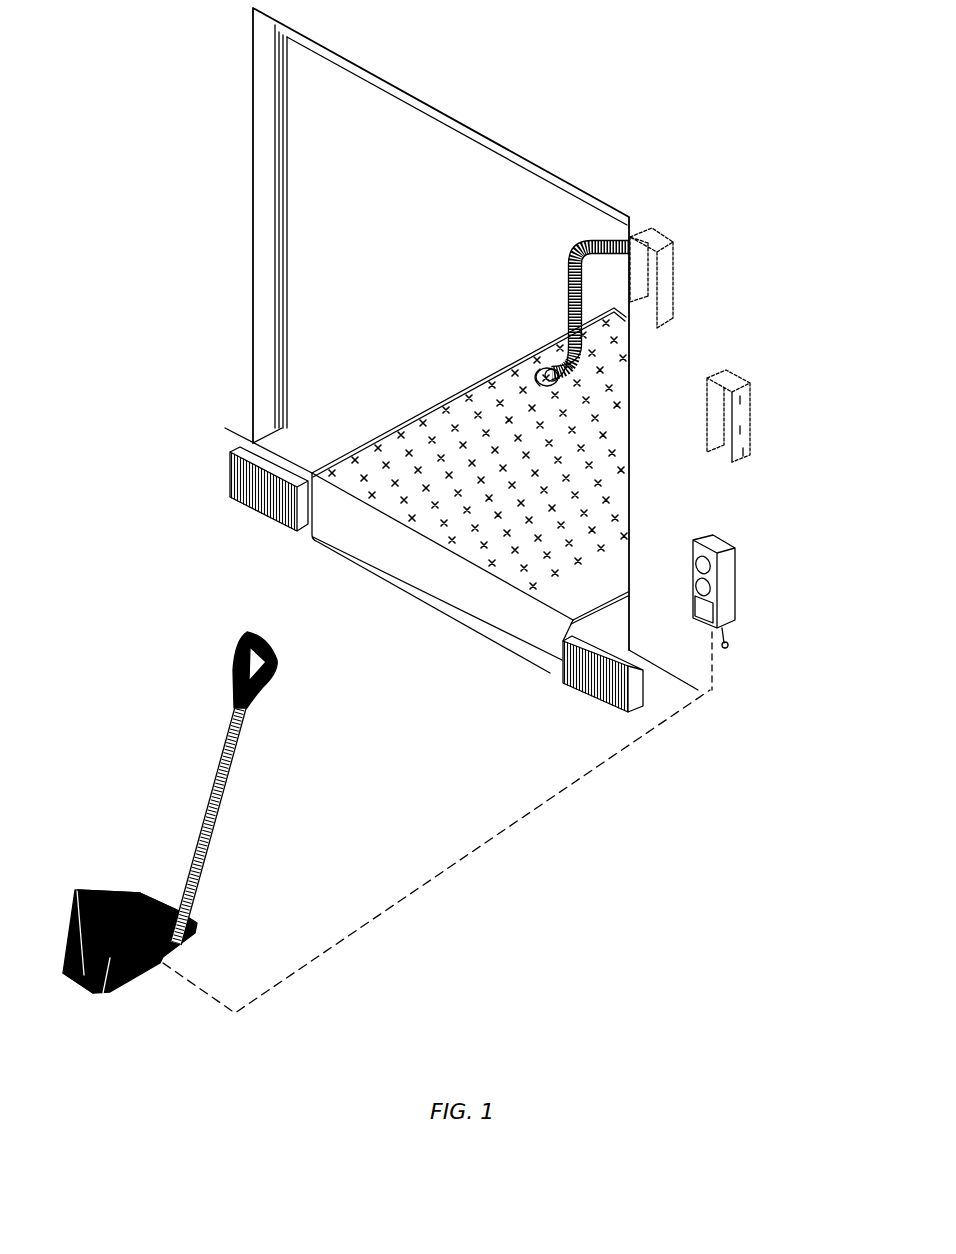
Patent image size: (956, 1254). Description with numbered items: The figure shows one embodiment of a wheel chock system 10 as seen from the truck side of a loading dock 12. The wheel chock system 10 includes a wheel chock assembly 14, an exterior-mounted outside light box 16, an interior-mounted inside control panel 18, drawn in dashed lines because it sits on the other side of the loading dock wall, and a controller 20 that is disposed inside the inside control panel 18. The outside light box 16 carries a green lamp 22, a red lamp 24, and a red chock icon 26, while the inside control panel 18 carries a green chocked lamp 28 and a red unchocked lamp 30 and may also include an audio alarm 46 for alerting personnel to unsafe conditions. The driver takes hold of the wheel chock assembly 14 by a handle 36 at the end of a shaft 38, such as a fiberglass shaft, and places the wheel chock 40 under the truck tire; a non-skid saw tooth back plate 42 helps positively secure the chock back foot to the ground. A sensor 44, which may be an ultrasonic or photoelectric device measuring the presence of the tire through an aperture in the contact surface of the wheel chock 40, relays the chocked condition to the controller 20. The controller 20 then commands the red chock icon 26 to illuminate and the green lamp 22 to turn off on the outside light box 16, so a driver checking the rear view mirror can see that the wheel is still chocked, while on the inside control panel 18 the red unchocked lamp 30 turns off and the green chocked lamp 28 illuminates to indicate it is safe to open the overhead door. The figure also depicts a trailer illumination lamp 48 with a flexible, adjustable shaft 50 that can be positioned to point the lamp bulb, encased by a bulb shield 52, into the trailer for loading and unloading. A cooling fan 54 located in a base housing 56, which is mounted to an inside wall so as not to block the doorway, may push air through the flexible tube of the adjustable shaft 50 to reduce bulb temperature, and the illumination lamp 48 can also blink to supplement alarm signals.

The wheel chock system 10 is at (200, 115).
The loading dock 12 is at (588, 143).
The wheel chock assembly 14 is at (200, 932).
The outside light box 16 is at (713, 540).
The inside control panel 18 is at (771, 390).
The controller 20 is at (742, 378).
The green lamp 22 is at (712, 590).
The red lamp 24 is at (712, 567).
The red chock icon 26 is at (710, 614).
The green chocked lamp 28 is at (742, 430).
The red unchocked lamp 30 is at (742, 400).
The handle 36 is at (278, 667).
The shaft 38 is at (226, 782).
The wheel chock 40 is at (138, 893).
The non-skid saw tooth back plate 42 is at (97, 994).
The sensor 44 is at (127, 892).
The audio alarm 46 is at (745, 452).
The trailer illumination lamp 48 is at (528, 300).
The adjustable shaft 50 is at (585, 249).
The bulb shield 52 is at (528, 368).
The cooling fan 54 is at (719, 278).
The base housing 56 is at (674, 292).